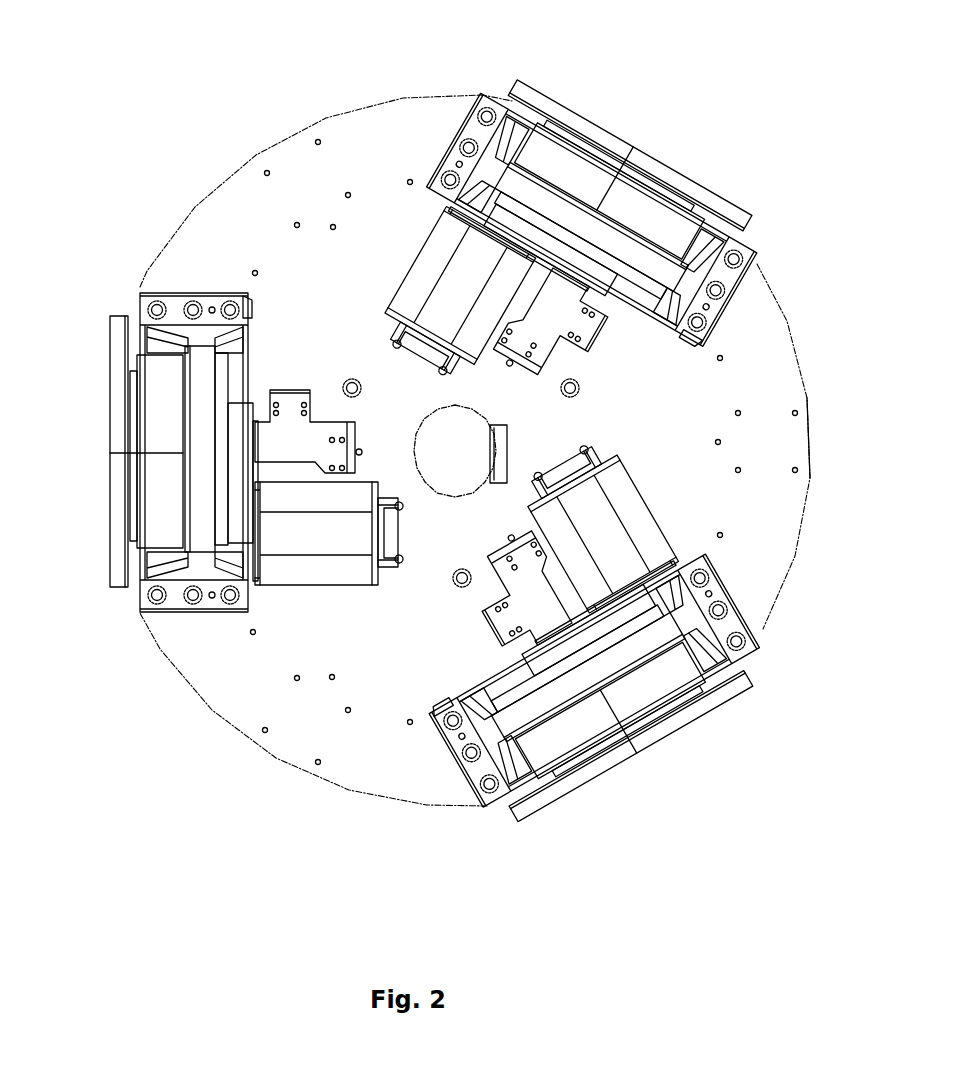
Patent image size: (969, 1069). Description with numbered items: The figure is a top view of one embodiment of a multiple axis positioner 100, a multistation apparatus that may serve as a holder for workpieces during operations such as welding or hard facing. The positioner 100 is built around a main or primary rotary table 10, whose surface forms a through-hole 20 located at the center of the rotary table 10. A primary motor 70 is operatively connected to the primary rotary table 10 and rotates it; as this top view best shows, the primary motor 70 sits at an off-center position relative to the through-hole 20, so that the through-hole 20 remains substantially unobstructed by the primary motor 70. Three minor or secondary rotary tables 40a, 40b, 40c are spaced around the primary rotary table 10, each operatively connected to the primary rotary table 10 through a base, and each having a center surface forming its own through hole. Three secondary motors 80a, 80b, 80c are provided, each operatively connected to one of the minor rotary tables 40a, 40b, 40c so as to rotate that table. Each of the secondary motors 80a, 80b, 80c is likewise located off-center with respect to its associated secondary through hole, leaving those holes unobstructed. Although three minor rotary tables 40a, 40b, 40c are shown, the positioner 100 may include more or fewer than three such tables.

The multiple axis positioner 100 is at (588, 45).
The primary rotary table 10 is at (378, 800).
The through-hole 20 is at (445, 452).
The primary motor 70 is at (497, 451).
The minor rotary table 40a is at (665, 740).
The minor rotary table 40b is at (630, 150).
The minor rotary table 40c is at (108, 428).
The secondary motor 80a is at (635, 520).
The secondary motor 80b is at (443, 242).
The secondary motor 80c is at (295, 570).